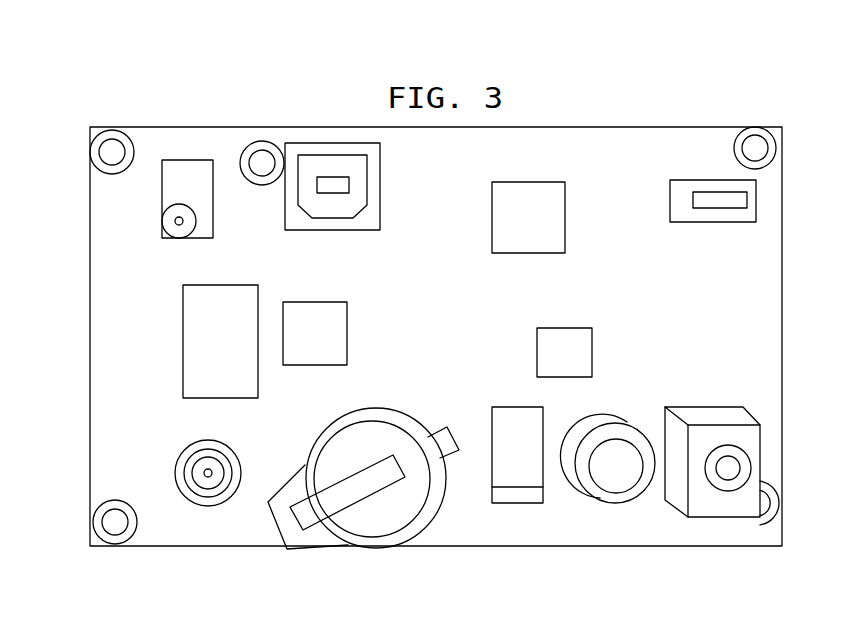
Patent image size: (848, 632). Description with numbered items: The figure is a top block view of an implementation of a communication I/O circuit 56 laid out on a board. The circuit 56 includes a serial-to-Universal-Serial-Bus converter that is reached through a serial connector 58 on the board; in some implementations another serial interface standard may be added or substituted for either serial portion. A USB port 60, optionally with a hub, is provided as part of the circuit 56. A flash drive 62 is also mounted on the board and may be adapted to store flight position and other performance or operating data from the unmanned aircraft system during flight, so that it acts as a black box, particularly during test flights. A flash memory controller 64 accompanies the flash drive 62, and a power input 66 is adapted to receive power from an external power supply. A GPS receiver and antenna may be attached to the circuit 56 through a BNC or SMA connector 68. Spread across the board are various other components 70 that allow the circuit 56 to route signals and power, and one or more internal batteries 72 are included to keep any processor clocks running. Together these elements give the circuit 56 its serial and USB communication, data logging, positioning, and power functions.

The communication I/O circuit 56 is at (158, 110).
The RS-232/RS-422 connector 58 is at (620, 475).
The USB port 60 is at (327, 163).
The flash drive 62 is at (213, 349).
The flash memory controller 64 is at (304, 318).
The power input 66 is at (179, 221).
The SMA connector 68 is at (208, 478).
The other components 70 is at (575, 350).
The internal battery 72 is at (390, 498).